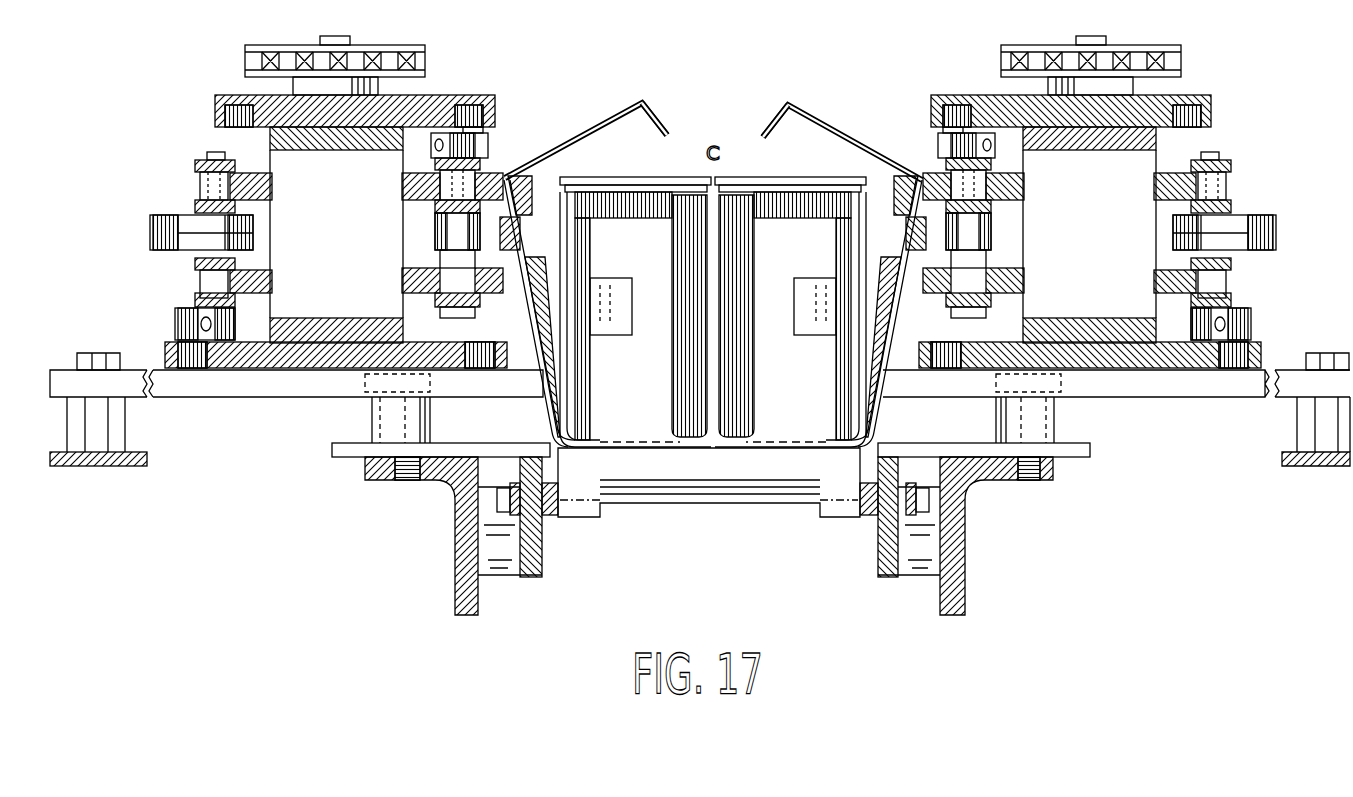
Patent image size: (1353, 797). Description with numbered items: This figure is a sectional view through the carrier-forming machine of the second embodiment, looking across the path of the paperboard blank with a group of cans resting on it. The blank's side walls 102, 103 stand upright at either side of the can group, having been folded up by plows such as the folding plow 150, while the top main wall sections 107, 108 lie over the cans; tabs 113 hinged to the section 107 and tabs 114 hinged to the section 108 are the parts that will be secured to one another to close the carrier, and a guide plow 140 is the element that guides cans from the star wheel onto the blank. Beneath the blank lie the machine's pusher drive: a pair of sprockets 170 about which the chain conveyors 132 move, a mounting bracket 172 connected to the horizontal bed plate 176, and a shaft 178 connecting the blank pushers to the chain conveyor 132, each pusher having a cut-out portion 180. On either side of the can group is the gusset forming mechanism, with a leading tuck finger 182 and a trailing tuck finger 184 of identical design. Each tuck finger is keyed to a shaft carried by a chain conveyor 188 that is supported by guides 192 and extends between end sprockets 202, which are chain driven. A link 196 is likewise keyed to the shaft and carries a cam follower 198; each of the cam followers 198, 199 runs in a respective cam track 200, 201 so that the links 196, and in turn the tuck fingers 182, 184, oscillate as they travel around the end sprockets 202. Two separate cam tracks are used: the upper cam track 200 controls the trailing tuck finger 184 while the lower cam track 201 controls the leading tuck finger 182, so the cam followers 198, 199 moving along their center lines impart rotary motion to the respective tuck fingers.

The side wall 102 is at (562, 406).
The side wall 103 is at (862, 392).
The top main wall section 107 is at (588, 132).
The top main wall section 108 is at (862, 140).
The tabs 113 is at (665, 126).
The tabs 114 is at (770, 126).
The chain conveyor 132 is at (545, 515).
The guide plow 140 is at (880, 270).
The folding plow 150 is at (885, 405).
The sprocket 170 is at (885, 578).
The mounting bracket 172 is at (968, 550).
The bed plate 176 is at (1092, 447).
The shaft 178 is at (700, 500).
The cut-out portion 180 is at (806, 322).
The leading tuck finger 182 is at (920, 184).
The trailing tuck finger 184 is at (1265, 252).
The chain conveyor 188 is at (1168, 42).
The guides 192 is at (1030, 184).
The link 196 is at (950, 145).
The cam follower 198 is at (953, 113).
The cam follower 199 is at (1258, 352).
The cam track 200 is at (1195, 115).
The cam track 201 is at (940, 344).
The end sprockets 202 is at (1140, 67).